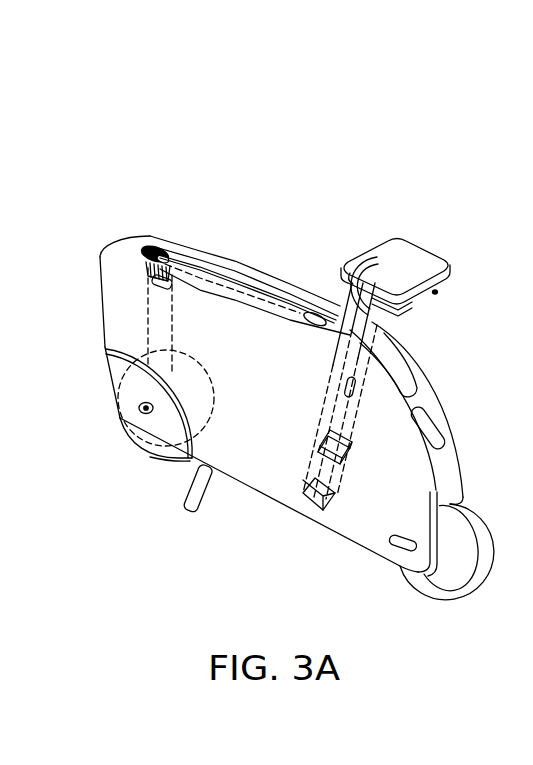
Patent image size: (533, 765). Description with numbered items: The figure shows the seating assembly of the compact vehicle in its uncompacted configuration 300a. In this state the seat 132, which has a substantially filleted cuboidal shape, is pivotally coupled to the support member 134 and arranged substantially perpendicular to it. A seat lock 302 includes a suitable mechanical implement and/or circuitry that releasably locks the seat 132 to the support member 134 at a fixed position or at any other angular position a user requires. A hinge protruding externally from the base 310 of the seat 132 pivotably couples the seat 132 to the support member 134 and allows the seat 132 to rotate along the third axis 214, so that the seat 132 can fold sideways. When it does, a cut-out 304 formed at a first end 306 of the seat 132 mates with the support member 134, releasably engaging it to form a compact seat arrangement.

The uncompacted configuration 300a is at (184, 118).
The seat 132 is at (406, 258).
The first end 306 is at (346, 284).
The third axis 214 is at (337, 297).
The seat lock 302 is at (437, 292).
The base 310 is at (418, 298).
The cut-out 304 is at (380, 318).
The support member 134 is at (412, 370).